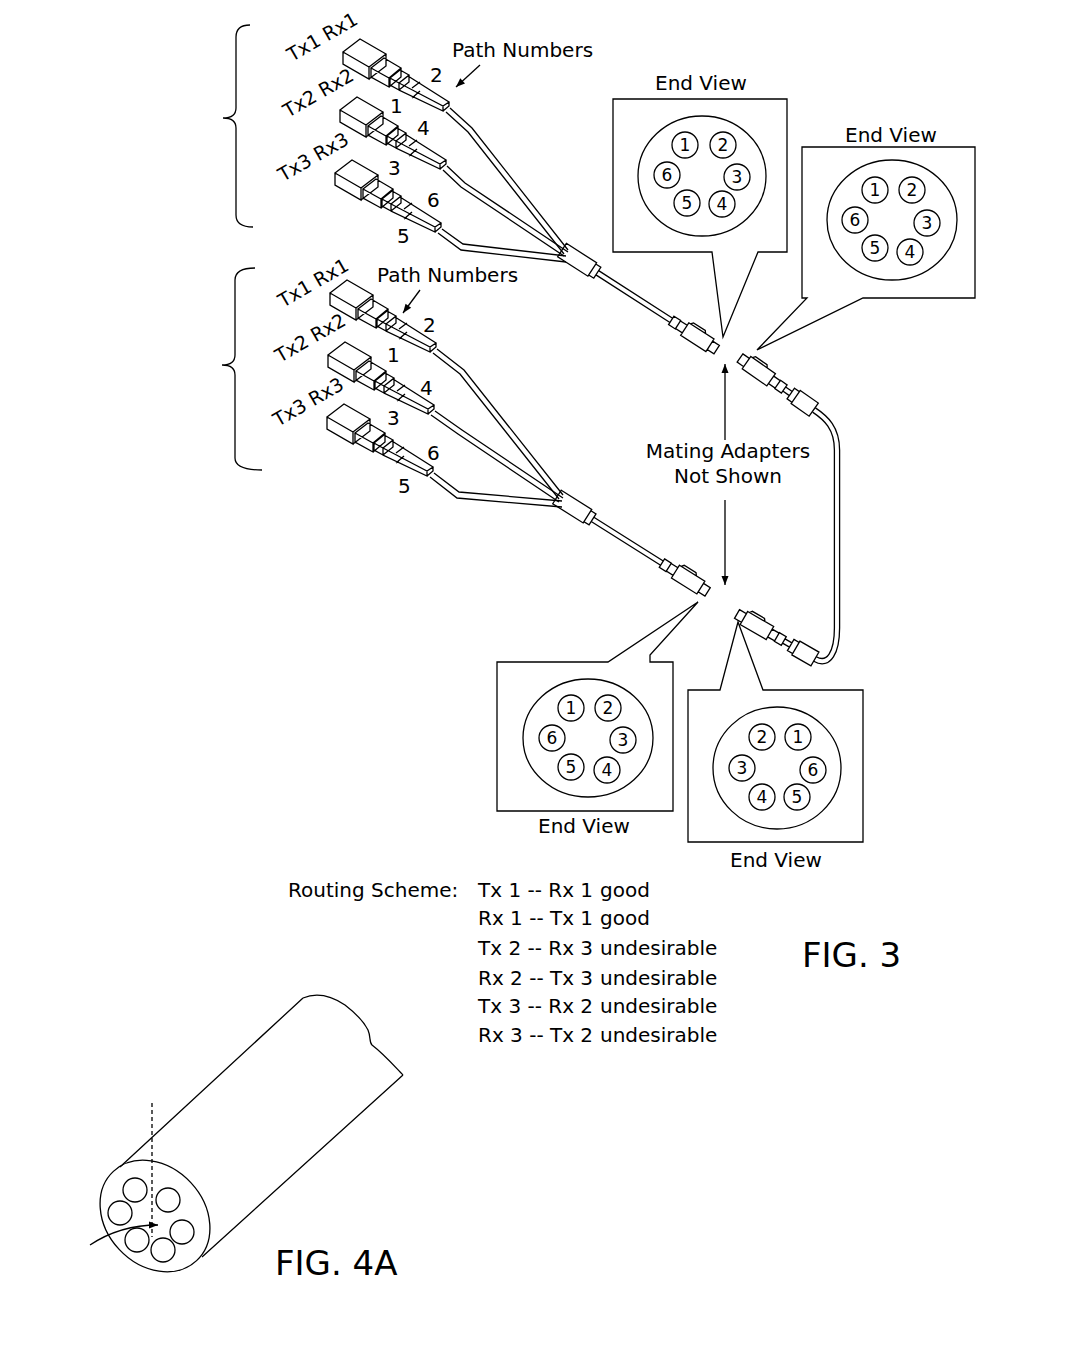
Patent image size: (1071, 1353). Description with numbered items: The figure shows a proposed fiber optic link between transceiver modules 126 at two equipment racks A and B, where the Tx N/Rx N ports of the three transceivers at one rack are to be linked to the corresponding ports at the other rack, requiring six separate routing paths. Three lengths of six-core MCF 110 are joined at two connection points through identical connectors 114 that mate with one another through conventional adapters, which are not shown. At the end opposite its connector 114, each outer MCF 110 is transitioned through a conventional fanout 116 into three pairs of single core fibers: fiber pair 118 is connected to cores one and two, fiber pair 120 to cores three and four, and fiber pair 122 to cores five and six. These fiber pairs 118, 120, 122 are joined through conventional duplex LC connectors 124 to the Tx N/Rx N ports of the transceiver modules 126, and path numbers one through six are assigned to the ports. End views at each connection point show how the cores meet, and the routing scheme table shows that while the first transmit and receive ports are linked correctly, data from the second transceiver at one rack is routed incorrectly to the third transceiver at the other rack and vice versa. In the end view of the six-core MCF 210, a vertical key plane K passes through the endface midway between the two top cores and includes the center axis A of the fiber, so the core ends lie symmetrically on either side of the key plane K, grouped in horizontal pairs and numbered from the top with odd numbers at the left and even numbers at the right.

In FIG. 3, the six-core MCF 110 is at (610, 287).
In FIG. 3, the connector 114 is at (700, 347).
In FIG. 3, the fanout 116 is at (578, 337).
In FIG. 3, the fiber pair 118 is at (447, 293).
In FIG. 3, the fiber pair 120 is at (447, 293).
In FIG. 3, the fiber pair 122 is at (535, 262).
In FIG. 3, the duplex LC connector 124 is at (478, 118).
In FIG. 3, the transceiver module 126 is at (377, 47).
In FIG. 4A, the six-core MCF 210 is at (312, 1142).
In FIG. 3, the center axis A is at (230, 126).
In FIG. 4A, the center axis A is at (115, 1244).
In FIG. 3, the equipment rack B is at (232, 369).
In FIG. 4A, the key plane K is at (152, 1126).